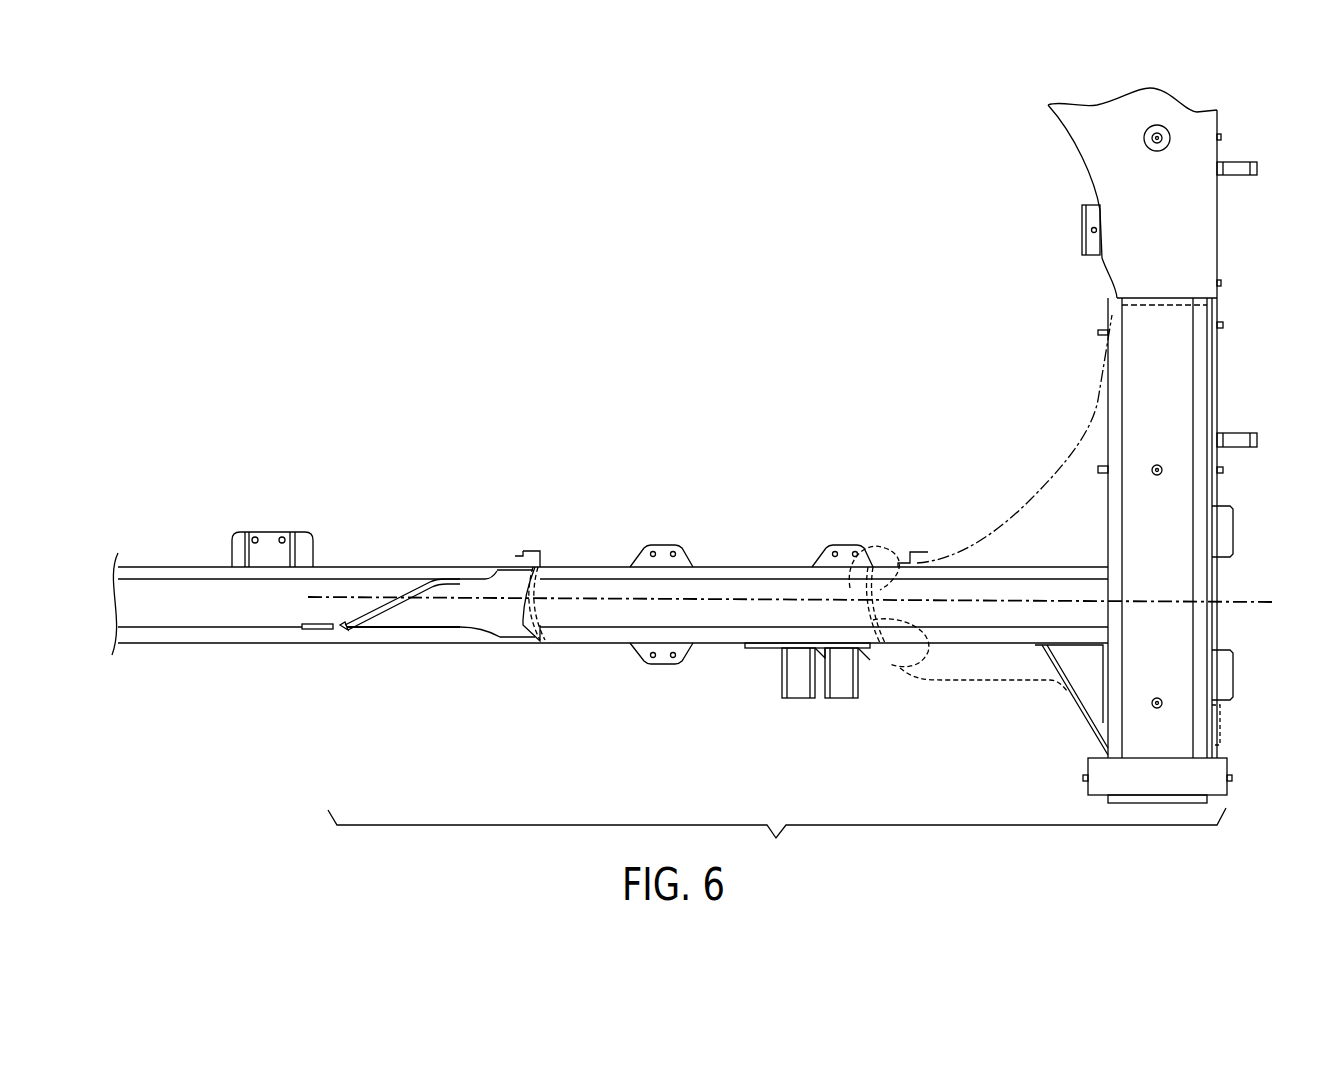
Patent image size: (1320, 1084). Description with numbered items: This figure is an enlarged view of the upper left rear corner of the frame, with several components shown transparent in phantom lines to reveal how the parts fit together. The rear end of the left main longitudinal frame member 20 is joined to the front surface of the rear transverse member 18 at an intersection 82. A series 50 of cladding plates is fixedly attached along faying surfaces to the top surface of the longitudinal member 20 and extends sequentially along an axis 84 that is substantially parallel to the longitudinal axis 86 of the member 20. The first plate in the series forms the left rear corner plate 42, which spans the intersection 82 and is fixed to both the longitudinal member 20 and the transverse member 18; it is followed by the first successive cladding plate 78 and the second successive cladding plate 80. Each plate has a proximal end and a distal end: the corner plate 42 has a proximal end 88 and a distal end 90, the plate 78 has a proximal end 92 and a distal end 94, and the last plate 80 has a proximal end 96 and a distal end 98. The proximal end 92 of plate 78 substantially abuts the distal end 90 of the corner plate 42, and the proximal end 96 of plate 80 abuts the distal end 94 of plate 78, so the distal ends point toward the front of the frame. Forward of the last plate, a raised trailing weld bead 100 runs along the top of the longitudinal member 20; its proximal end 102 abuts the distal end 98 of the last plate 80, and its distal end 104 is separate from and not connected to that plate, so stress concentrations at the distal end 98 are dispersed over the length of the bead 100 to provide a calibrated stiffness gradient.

The rear transverse member 18 is at (1183, 409).
The left main longitudinal frame member 20 is at (175, 620).
The left rear corner plate 42 is at (1072, 475).
The series of cladding plates 50 is at (777, 839).
The first left rear upper corner successive cladding plate 78 is at (600, 563).
The second successive cladding plate 80 is at (497, 580).
The intersection 82 is at (1108, 590).
The axis of the series of cladding plates 84 is at (1230, 603).
The longitudinal axis of the left main frame member 86 is at (1272, 605).
The proximal end of corner plate 88 is at (1217, 345).
The distal end of corner plate 90 is at (862, 550).
The proximal end of first successive cladding plate 92 is at (906, 632).
The distal end of first successive cladding plate 94 is at (527, 625).
The proximal end of second successive cladding plate 96 is at (535, 590).
The distal end of second successive cladding plate 98 is at (367, 623).
The trailing weld bead 100 is at (320, 628).
The proximal end of the bead 102 is at (360, 617).
The distal end of the bead 104 is at (300, 622).